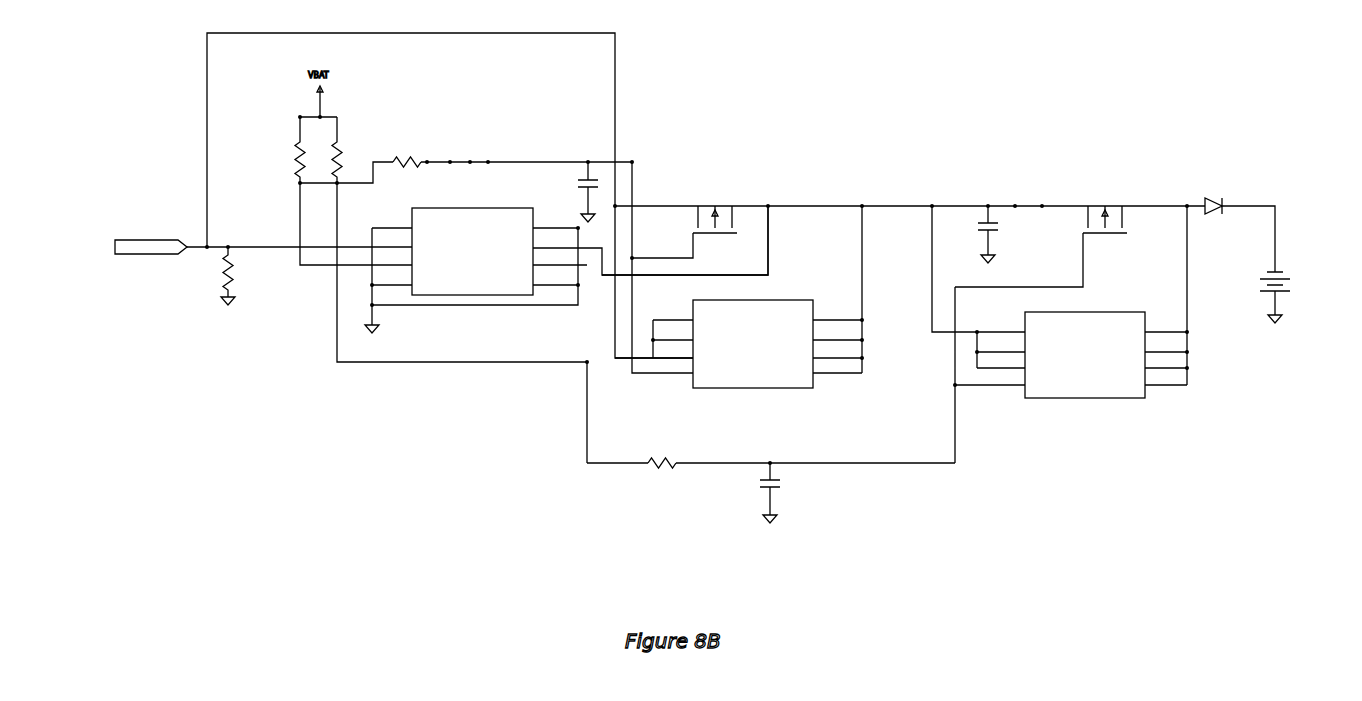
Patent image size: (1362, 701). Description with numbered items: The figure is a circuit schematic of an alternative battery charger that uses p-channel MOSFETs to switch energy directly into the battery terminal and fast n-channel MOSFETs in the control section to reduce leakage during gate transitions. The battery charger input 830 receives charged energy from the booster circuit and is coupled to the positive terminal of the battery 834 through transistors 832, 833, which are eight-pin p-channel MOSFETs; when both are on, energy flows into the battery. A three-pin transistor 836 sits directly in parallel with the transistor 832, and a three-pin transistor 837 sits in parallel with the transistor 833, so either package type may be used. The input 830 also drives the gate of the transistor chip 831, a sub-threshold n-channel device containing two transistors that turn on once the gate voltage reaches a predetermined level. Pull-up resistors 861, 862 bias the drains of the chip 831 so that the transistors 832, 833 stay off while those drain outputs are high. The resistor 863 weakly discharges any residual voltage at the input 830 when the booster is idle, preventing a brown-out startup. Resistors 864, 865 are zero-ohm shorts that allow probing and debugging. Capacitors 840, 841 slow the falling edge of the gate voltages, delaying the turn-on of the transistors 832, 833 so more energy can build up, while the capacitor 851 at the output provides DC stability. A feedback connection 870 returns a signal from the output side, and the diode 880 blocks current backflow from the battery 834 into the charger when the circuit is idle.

The battery charger input 830 is at (155, 255).
The transistor chip 831 is at (472, 244).
The transistor 832 is at (752, 338).
The transistor 833 is at (1084, 349).
The battery 834 is at (1262, 291).
The transistor 836 is at (724, 176).
The transistor 837 is at (1089, 184).
The capacitor 840 is at (571, 149).
The capacitor 841 is at (759, 493).
The capacitor 851 is at (999, 243).
The resistor 861 is at (292, 148).
The resistor 862 is at (352, 133).
The resistor 863 is at (216, 284).
The resistor 864 is at (643, 480).
The resistor 865 is at (420, 143).
The feedback line 870 is at (771, 244).
The diode 880 is at (1222, 180).